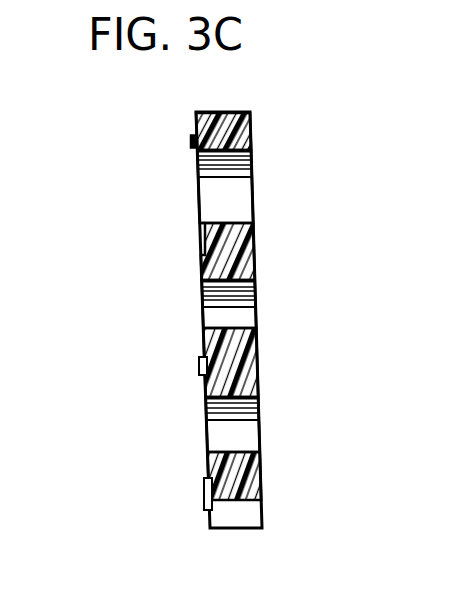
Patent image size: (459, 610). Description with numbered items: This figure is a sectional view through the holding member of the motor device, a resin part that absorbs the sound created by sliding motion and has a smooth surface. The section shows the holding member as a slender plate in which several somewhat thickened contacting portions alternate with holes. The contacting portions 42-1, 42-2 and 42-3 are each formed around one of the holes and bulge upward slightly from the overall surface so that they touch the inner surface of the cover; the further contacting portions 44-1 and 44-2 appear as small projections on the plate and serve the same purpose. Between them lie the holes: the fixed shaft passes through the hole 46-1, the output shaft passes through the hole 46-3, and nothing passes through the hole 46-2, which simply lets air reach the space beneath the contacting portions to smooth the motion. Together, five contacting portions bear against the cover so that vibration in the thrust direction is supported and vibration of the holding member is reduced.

The contacting portion 42-1 is at (195, 146).
The hole 46-1 is at (200, 203).
The hole 46-2 is at (207, 308).
The contacting portion 42-2 is at (195, 347).
The contacting portion 44-2 is at (200, 362).
The hole 46-3 is at (202, 425).
The contacting portion 42-3 is at (202, 465).
The contacting portion 44-1 is at (202, 495).